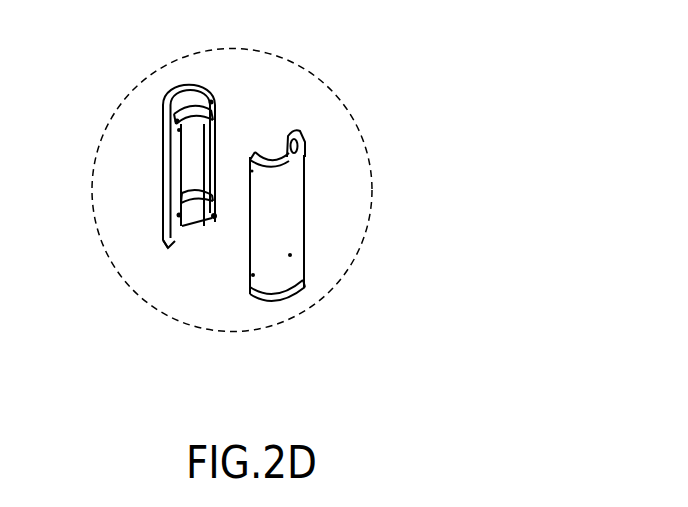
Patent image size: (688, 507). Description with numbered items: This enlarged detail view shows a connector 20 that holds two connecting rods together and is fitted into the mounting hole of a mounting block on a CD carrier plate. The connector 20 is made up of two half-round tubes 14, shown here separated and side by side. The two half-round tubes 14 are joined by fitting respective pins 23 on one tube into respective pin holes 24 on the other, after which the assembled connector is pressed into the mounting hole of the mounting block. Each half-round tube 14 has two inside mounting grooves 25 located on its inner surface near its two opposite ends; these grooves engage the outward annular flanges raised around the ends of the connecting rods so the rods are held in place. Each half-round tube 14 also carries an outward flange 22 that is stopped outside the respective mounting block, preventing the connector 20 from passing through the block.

The half-round tube 14 is at (188, 226).
The connector 20 is at (226, 50).
The outward flange 22 is at (167, 240).
The pin 23 is at (177, 122).
The pin hole 24 is at (301, 147).
The inside mounting groove 25 is at (203, 226).